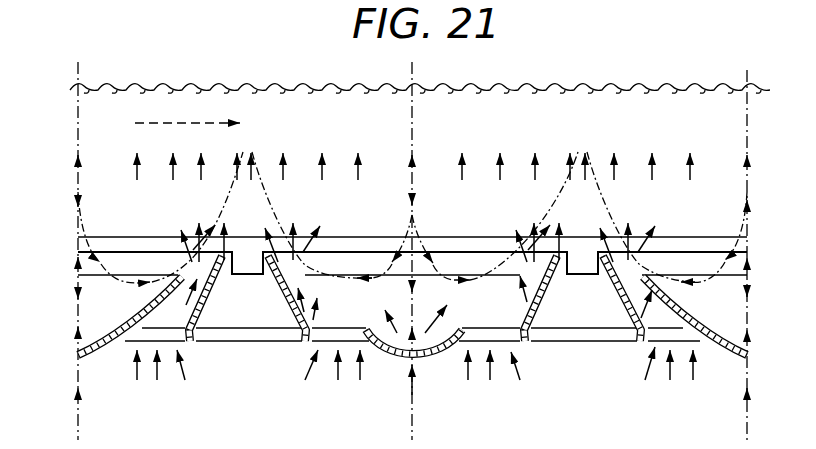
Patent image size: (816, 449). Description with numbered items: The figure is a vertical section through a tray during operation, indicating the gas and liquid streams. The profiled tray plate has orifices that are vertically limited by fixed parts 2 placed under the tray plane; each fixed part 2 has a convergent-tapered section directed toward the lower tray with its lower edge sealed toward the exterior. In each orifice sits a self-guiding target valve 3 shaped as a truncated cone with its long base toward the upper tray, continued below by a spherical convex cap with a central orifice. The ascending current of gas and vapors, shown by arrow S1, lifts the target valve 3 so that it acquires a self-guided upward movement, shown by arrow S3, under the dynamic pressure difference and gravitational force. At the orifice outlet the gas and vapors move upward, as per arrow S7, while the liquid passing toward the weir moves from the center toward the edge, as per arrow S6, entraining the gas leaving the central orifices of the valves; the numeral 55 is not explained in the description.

The fixed parts 2 is at (200, 307).
The target valve 3 is at (386, 350).
The surface flow direction 55 is at (185, 123).
The ascending gas and vapor current S1 is at (520, 380).
The target valve upward movement S3 is at (405, 282).
The liquid movement from center toward edge S6 is at (388, 258).
The gas upward movement at orifice outlet S7 is at (322, 228).